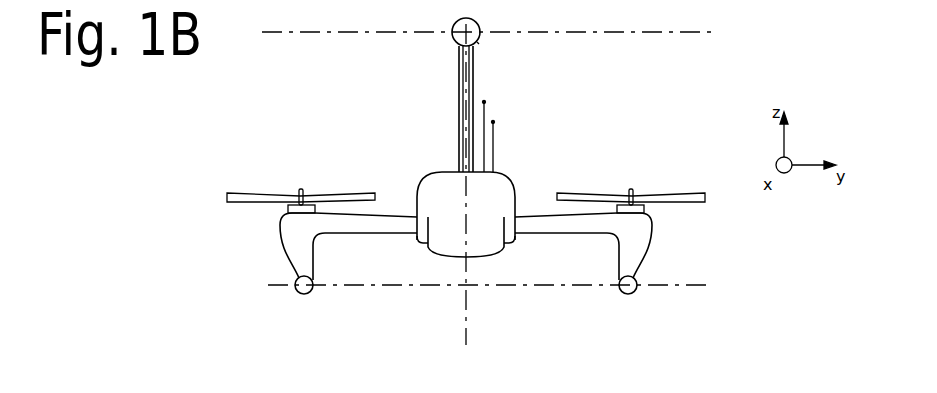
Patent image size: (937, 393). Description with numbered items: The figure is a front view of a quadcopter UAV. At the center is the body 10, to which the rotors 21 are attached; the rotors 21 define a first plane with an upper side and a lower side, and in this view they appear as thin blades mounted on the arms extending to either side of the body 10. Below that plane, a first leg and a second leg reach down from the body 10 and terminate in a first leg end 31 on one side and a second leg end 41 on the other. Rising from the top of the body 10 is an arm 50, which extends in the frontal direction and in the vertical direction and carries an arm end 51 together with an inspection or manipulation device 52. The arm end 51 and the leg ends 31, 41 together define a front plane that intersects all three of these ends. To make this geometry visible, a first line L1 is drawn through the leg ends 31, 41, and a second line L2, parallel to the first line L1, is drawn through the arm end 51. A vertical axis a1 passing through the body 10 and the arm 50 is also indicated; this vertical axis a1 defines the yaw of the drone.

The body 10 is at (458, 237).
The rotor 21 is at (260, 193).
The first leg end 31 is at (297, 286).
The second leg end 41 is at (631, 288).
The arm 50 is at (462, 147).
The arm end 51 is at (454, 25).
The inspection or manipulation device 52 is at (477, 42).
The first line L1 is at (377, 286).
The second line L2 is at (342, 32).
The vertical axis a1 is at (467, 307).